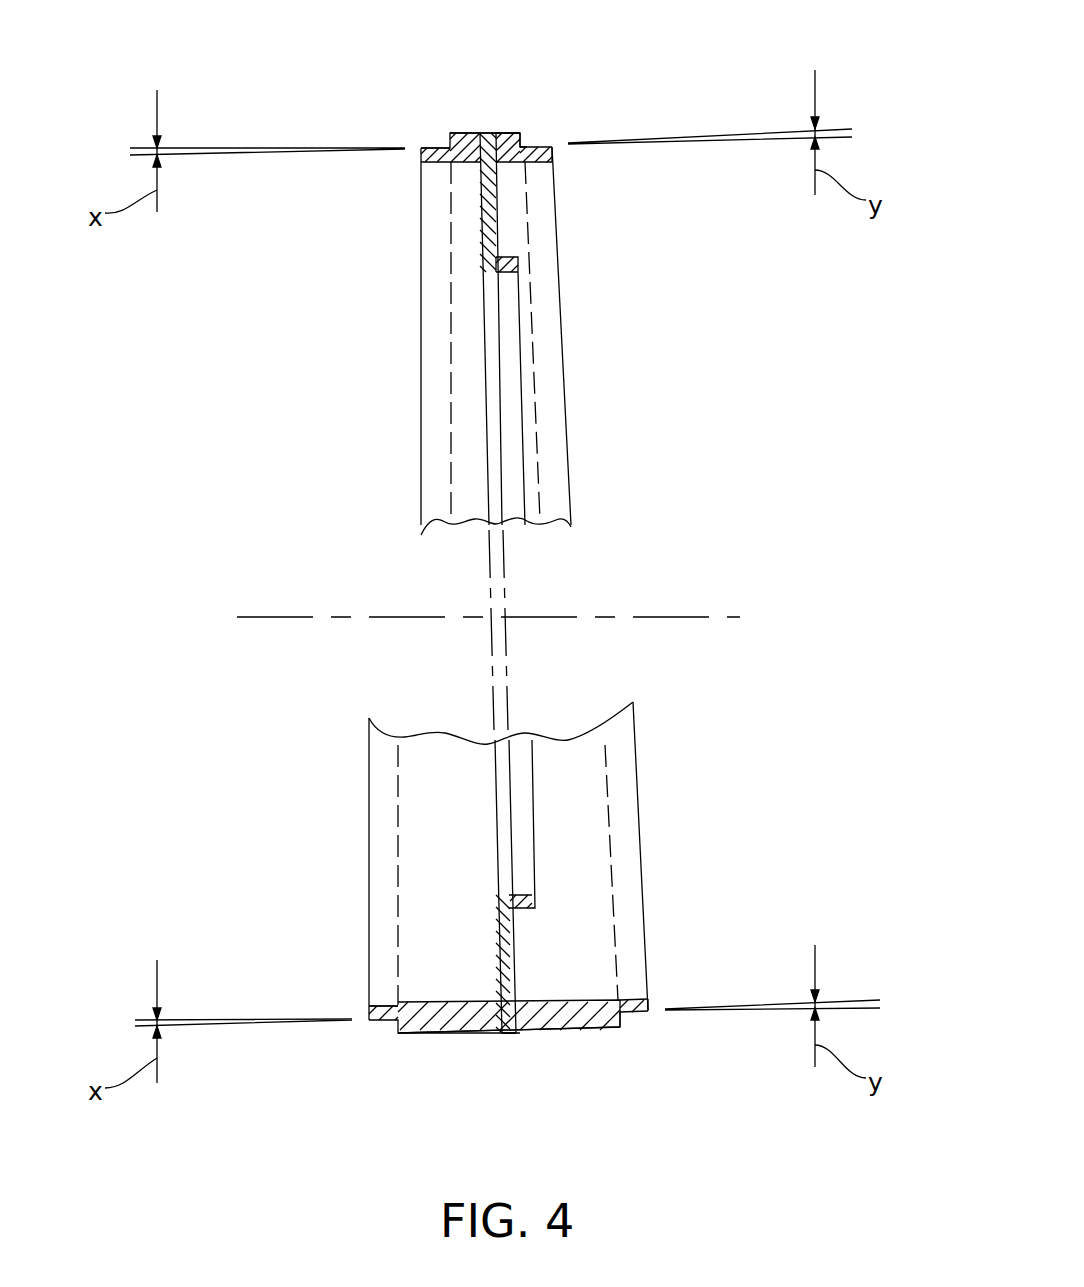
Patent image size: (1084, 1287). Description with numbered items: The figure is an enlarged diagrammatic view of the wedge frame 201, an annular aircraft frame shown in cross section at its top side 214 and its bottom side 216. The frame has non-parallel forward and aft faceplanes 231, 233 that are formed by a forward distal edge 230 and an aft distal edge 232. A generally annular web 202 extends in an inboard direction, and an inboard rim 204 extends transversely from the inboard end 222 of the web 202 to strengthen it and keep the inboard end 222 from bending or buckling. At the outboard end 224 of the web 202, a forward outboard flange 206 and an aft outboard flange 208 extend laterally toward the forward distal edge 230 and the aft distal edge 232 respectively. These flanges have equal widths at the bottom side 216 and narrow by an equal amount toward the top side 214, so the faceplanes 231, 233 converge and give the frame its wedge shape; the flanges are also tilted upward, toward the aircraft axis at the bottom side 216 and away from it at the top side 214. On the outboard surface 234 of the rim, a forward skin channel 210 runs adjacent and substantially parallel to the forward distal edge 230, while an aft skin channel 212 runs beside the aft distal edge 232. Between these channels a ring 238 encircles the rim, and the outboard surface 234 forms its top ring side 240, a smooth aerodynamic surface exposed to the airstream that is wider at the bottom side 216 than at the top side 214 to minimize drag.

The wedge frame 201 is at (232, 345).
The web 202 is at (485, 228).
The inboard rim 204 is at (520, 263).
The forward outboard flange 206 is at (455, 172).
The aft outboard flange 208 is at (528, 165).
The forward skin channel 210 is at (440, 148).
The aft skin channel 212 is at (548, 147).
The top side 214 is at (487, 115).
The bottom side 216 is at (507, 1055).
The inboard end 222 is at (490, 282).
The outboard end 224 is at (485, 130).
The forward distal edge 230 is at (410, 152).
The forward faceplane 231 is at (414, 405).
The aft distal edge 232 is at (552, 157).
The aft faceplane 233 is at (572, 441).
The outboard surface 234 is at (528, 120).
The ring 238 is at (527, 147).
The top ring side 240 is at (516, 120).